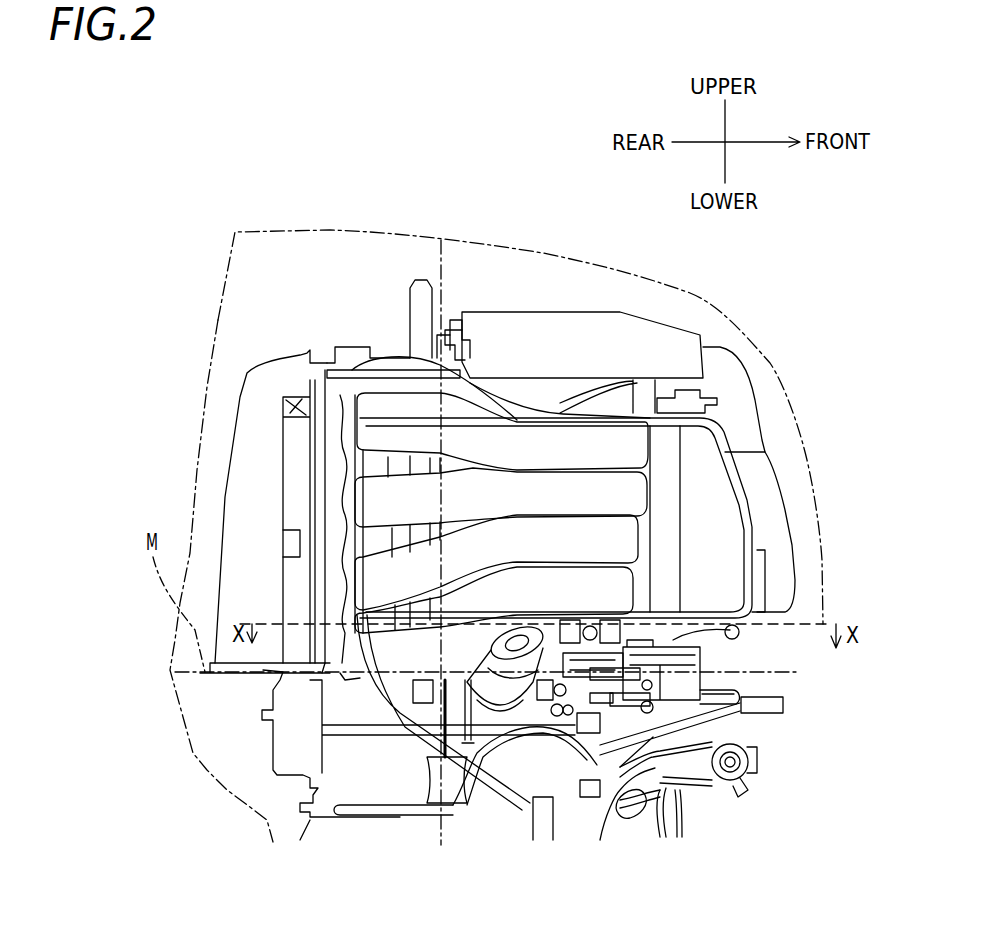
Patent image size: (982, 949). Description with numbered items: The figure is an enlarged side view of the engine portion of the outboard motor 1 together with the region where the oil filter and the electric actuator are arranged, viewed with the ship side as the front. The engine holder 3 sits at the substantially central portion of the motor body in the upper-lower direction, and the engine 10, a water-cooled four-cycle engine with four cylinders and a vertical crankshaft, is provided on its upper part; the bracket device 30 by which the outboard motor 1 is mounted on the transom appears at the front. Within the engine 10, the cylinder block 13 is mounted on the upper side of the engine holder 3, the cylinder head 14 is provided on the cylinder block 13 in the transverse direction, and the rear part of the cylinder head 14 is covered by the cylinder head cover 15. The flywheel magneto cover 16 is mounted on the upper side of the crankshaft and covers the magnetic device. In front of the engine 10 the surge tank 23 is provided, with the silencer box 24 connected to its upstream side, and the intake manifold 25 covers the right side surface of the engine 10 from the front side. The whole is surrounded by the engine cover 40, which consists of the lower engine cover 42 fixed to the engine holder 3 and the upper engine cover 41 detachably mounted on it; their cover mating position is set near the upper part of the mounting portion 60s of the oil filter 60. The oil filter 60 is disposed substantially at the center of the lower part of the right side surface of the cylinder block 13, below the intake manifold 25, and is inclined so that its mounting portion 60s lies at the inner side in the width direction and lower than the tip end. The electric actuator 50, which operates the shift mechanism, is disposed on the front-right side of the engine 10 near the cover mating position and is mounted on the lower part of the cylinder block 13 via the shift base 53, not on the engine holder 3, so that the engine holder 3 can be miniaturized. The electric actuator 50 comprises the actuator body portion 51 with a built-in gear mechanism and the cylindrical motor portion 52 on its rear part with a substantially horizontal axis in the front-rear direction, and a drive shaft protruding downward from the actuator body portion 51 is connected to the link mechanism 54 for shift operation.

The outboard motor 1 is at (578, 216).
The engine holder 3 is at (350, 777).
The engine 10 is at (402, 325).
The cylinder block 13 is at (498, 395).
The cylinder head 14 is at (352, 420).
The cylinder head cover 15 is at (303, 453).
The flywheel magneto cover 16 is at (588, 340).
The surge tank 23 is at (763, 488).
The silencer box 24 is at (740, 365).
The intake manifold 25 is at (470, 430).
The bracket device 30 is at (700, 828).
The engine cover 40 is at (97, 622).
The upper engine cover 41 is at (177, 619).
The lower engine cover 42 is at (178, 703).
The electric actuator 50 is at (738, 668).
The actuator body portion 51 is at (700, 633).
The motor portion 52 is at (593, 663).
The shift base 53 is at (688, 690).
The link mechanism 54 is at (636, 695).
The oil filter 60 is at (495, 688).
The mounting portion 60s is at (512, 712).